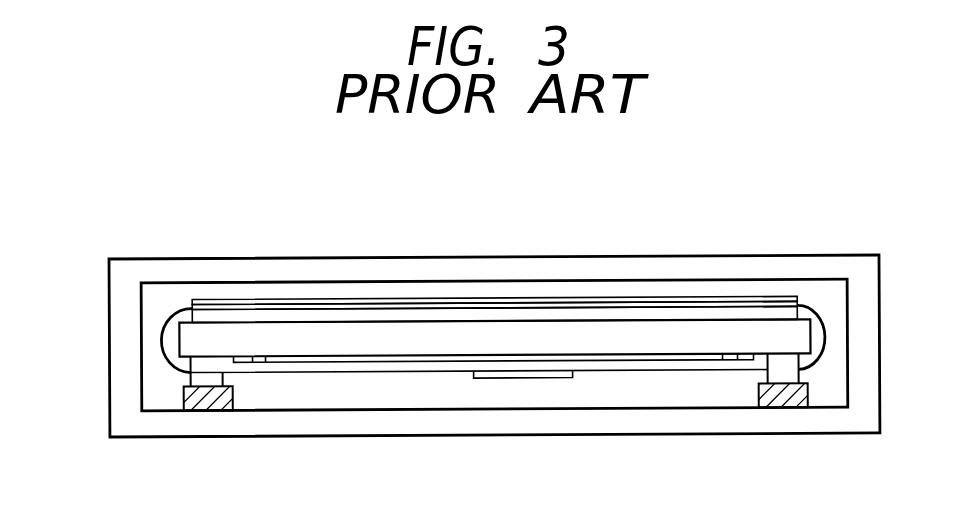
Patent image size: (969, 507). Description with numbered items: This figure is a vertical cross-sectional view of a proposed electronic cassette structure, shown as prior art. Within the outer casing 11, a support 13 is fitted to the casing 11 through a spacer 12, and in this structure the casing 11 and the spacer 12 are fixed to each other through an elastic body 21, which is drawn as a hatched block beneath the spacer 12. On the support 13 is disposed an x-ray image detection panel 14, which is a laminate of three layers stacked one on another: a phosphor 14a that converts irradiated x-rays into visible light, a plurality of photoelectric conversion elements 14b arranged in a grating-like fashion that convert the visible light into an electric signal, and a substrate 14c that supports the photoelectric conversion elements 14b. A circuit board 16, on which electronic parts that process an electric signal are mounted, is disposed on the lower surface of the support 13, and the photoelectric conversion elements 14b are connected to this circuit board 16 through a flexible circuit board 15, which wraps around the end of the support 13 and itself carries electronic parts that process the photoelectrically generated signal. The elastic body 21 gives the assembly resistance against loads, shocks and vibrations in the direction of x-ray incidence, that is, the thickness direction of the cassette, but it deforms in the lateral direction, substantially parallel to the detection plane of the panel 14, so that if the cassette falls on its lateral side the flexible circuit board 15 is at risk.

The casing 11 is at (120, 343).
The spacer 12 is at (783, 375).
The support 13 is at (363, 343).
The x-ray image detection panel 14 is at (494, 236).
The phosphor 14a is at (240, 300).
The photoelectric conversion elements 14b is at (353, 308).
The substrate 14c is at (457, 313).
The flexible circuit board 15 is at (163, 367).
The circuit board 16 is at (587, 365).
The elastic body 21 is at (775, 398).